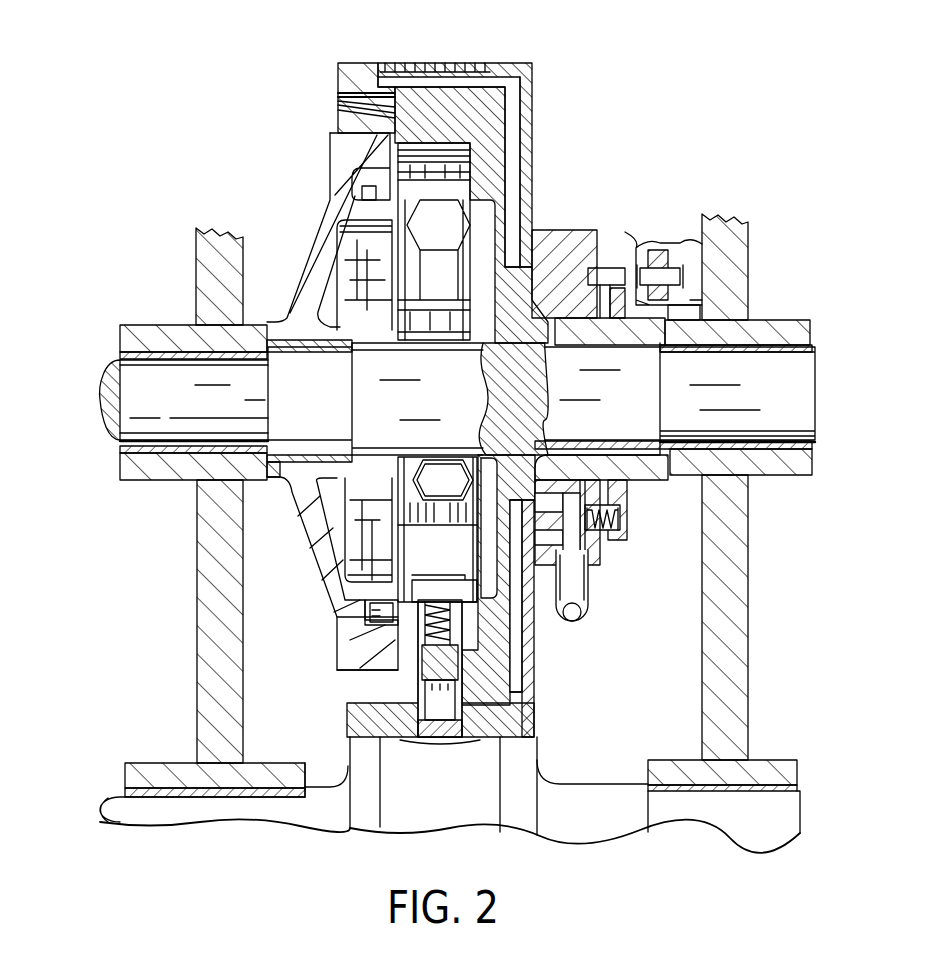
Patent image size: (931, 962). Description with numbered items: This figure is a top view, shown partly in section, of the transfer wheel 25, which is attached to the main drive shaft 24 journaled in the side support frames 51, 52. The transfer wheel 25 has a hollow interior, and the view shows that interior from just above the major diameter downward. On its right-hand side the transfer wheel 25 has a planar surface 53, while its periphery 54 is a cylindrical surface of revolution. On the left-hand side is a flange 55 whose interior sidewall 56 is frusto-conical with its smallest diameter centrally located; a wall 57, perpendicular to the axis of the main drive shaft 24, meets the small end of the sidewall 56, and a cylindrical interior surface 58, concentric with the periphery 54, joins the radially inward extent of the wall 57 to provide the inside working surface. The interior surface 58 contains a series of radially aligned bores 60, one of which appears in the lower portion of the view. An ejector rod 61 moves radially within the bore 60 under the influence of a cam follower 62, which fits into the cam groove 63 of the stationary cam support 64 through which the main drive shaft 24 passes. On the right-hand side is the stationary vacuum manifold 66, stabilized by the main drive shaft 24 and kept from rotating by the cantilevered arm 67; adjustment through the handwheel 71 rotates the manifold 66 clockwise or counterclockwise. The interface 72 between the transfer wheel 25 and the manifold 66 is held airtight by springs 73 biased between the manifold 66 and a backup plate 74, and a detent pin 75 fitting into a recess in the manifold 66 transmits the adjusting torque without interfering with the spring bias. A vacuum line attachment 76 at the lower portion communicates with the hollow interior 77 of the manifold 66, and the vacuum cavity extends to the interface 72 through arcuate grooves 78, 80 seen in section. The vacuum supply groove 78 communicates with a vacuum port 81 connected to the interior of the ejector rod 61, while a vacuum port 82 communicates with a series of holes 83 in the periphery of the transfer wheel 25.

The main drive shaft 24 is at (100, 378).
The transfer wheel 25 is at (534, 92).
The side support frame 51 is at (197, 602).
The side support frame 52 is at (752, 650).
The planar surface 53 is at (533, 162).
The periphery 54 is at (505, 63).
The flange 55 is at (338, 78).
The interior sidewall 56 is at (338, 96).
The wall 57 is at (395, 123).
The interior surface 58 is at (398, 152).
The bore 60 is at (416, 708).
The ejector rod 61 is at (440, 742).
The cam follower 62 is at (372, 637).
The cam groove 63 is at (366, 630).
The stationary cam support 64 is at (318, 570).
The stationary vacuum manifold 66 is at (558, 232).
The cantilevered arm 67 is at (658, 252).
The handwheel 71 is at (638, 240).
The interface 72 is at (540, 232).
The springs 73 is at (620, 518).
The backup plate 74 is at (628, 500).
The pin 75 is at (602, 270).
The vacuum line attachment 76 is at (575, 618).
The hollow interior 77 is at (573, 542).
The vacuum supply groove 78 is at (545, 508).
The arcuate groove 80 is at (530, 540).
The vacuum port 81 is at (518, 688).
The vacuum port 82 is at (513, 133).
The holes 83 is at (460, 62).